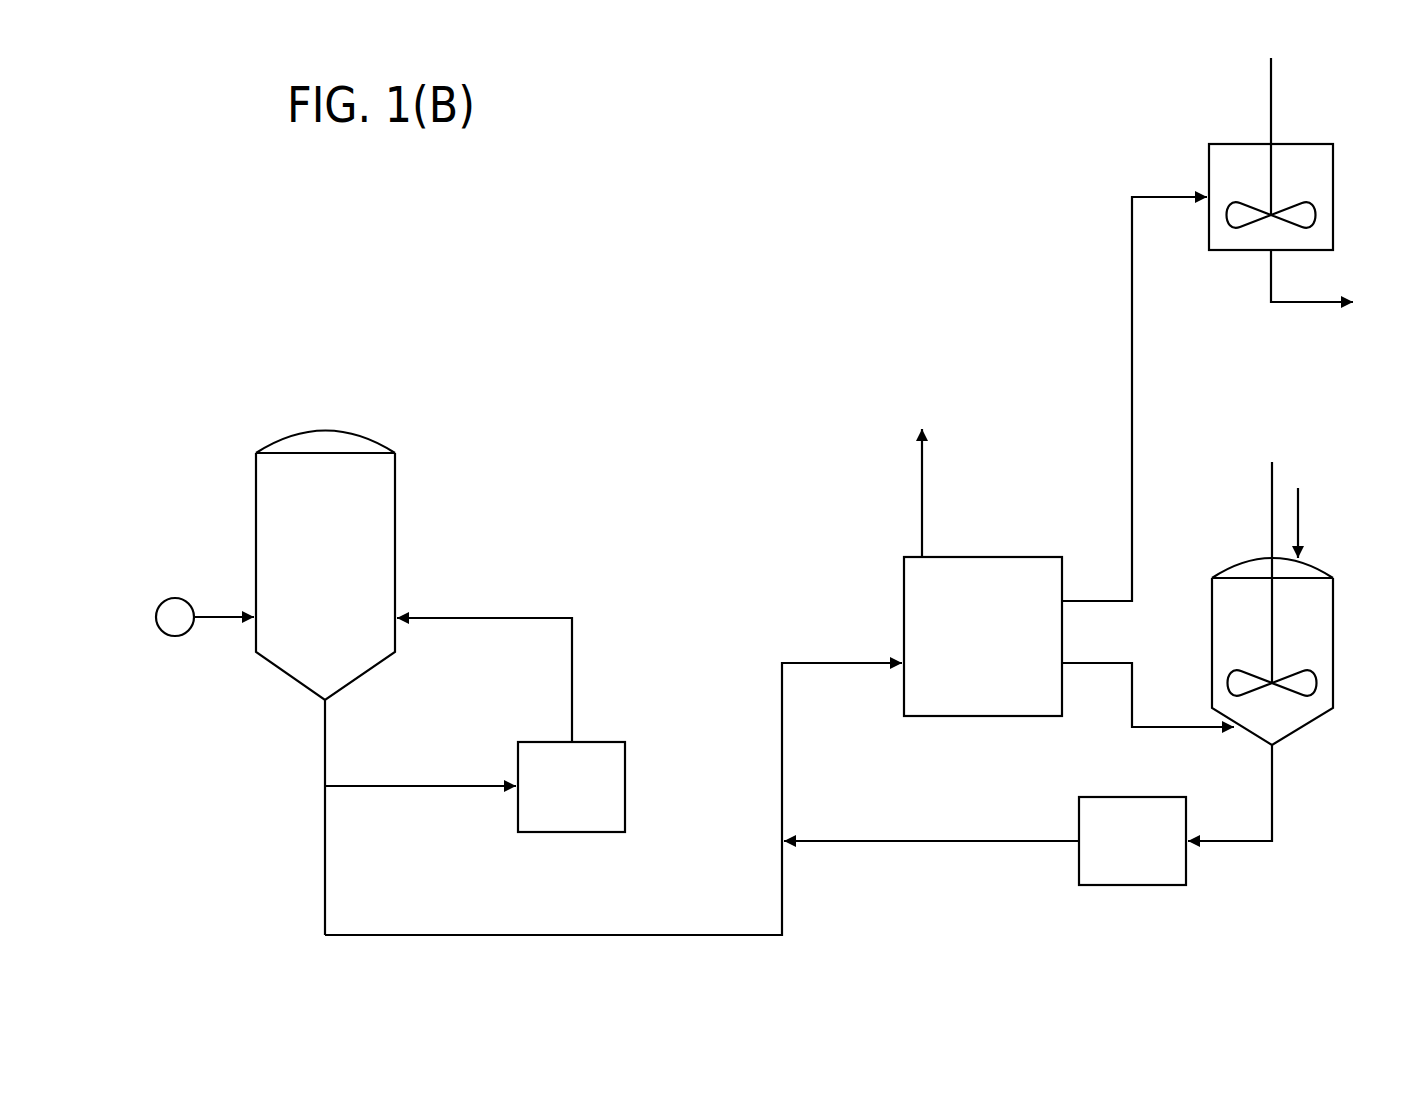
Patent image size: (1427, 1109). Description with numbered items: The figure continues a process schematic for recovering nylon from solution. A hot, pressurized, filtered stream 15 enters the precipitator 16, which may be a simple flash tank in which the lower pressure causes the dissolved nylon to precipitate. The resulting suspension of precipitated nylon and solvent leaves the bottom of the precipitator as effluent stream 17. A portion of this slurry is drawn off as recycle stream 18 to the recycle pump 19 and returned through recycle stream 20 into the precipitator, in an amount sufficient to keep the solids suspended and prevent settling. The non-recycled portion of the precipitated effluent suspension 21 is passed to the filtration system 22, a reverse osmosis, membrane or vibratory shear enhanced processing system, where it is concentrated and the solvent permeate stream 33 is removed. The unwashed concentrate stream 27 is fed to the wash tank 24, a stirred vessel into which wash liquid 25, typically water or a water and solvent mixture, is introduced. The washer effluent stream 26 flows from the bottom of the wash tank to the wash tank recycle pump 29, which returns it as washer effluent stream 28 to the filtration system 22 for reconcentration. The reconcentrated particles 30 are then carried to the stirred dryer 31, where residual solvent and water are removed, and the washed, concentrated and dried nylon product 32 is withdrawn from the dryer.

The filtered stream 15 is at (217, 612).
The precipitator 16 is at (333, 432).
The effluent stream 17 is at (322, 748).
The recycle stream 18 is at (392, 786).
The recycle pump 19 is at (545, 742).
The recycle stream 20 is at (537, 618).
The non-recycled portion of precipitated effluent suspension 21 is at (452, 935).
The filtration system 22 is at (978, 557).
The wash tank 24 is at (1333, 612).
The wash liquid 25 is at (1297, 511).
The washer effluent stream 26 is at (1272, 800).
The unwashed concentrate stream 27 is at (1178, 727).
The washer effluent stream 28 is at (960, 841).
The wash tank recycle pump 29 is at (1186, 876).
The reconcentrated particles 30 is at (1132, 372).
The dryer 31 is at (1209, 150).
The dried nylon product 32 is at (1306, 302).
The solvent permeate stream 33 is at (901, 491).